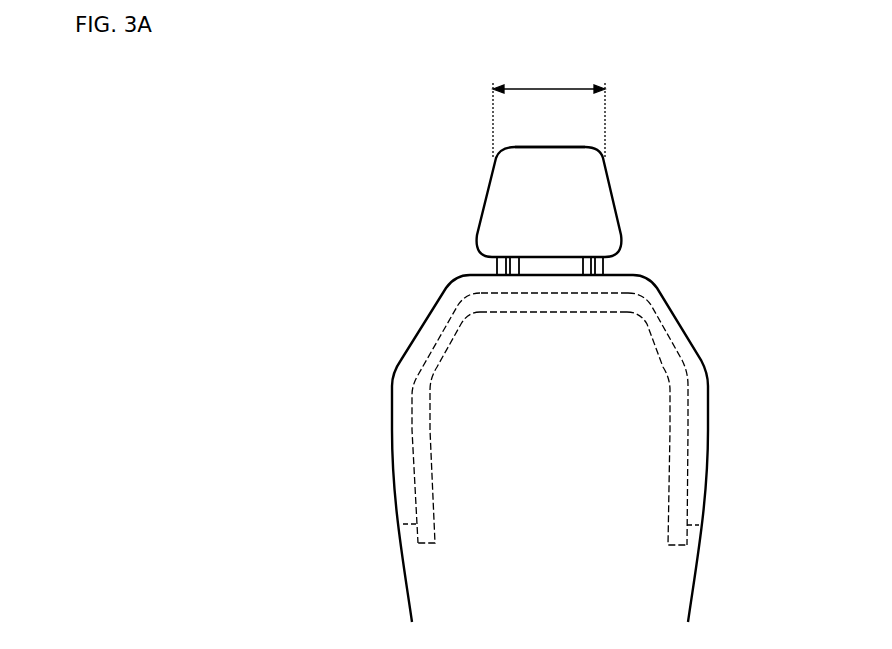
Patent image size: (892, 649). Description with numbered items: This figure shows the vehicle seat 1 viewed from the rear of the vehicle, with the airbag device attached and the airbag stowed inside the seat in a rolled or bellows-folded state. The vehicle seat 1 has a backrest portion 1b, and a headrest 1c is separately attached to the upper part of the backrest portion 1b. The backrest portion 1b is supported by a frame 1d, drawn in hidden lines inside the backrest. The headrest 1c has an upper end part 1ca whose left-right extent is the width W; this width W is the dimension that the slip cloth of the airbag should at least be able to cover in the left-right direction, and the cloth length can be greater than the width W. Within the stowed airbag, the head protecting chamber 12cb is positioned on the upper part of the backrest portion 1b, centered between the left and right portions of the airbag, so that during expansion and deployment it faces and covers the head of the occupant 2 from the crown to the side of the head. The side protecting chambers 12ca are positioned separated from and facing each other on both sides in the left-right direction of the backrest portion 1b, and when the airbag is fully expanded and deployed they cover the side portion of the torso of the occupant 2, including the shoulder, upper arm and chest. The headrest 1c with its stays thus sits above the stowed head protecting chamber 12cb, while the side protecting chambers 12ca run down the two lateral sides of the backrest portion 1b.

The vehicle seat 1 is at (694, 323).
The backrest portion 1b is at (624, 479).
The headrest 1c is at (505, 200).
The upper end part 1ca is at (552, 146).
The frame 1d is at (428, 450).
The occupant 2 is at (527, 268).
The side protecting chambers 12ca is at (396, 428).
The head protecting chamber 12cb is at (551, 292).
The width of the upper end part W is at (549, 109).